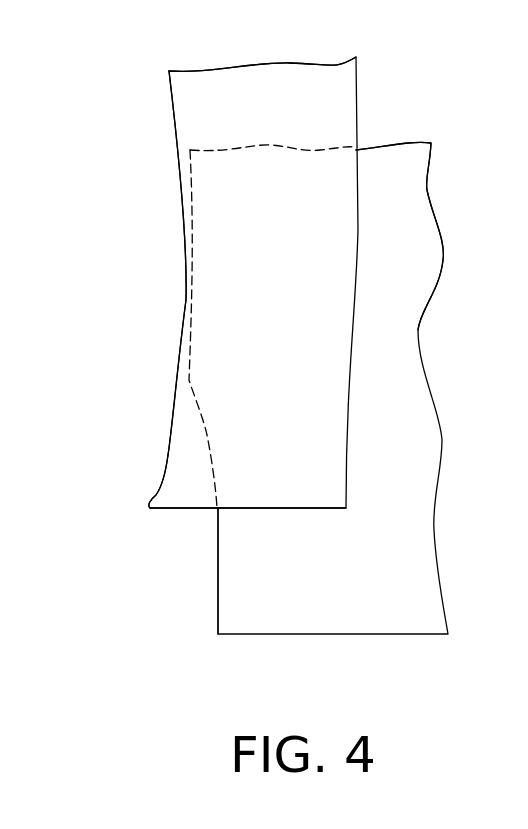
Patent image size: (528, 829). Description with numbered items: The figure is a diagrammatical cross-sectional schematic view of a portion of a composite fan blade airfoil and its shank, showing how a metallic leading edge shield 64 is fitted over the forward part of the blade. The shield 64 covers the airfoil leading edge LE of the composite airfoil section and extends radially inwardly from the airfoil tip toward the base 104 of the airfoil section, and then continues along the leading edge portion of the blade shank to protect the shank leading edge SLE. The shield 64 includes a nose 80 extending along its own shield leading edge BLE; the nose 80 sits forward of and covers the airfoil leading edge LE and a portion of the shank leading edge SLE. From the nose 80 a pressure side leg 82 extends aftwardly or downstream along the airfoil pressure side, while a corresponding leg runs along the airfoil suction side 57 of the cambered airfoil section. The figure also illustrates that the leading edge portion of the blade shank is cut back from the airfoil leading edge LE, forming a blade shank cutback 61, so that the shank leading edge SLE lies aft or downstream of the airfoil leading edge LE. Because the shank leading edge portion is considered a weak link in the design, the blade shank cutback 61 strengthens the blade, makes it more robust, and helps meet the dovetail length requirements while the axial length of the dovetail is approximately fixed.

The nose 80 is at (169, 453).
The metallic leading edge shield 64 is at (186, 311).
The blade shank cutback 61 is at (205, 520).
The pressure side leg 82 is at (287, 478).
The base 104 is at (403, 447).
The airfoil suction side 57 is at (400, 268).
The shield leading edge BLE is at (176, 112).
The airfoil leading edge LE is at (184, 199).
The shank leading edge SLE is at (218, 550).